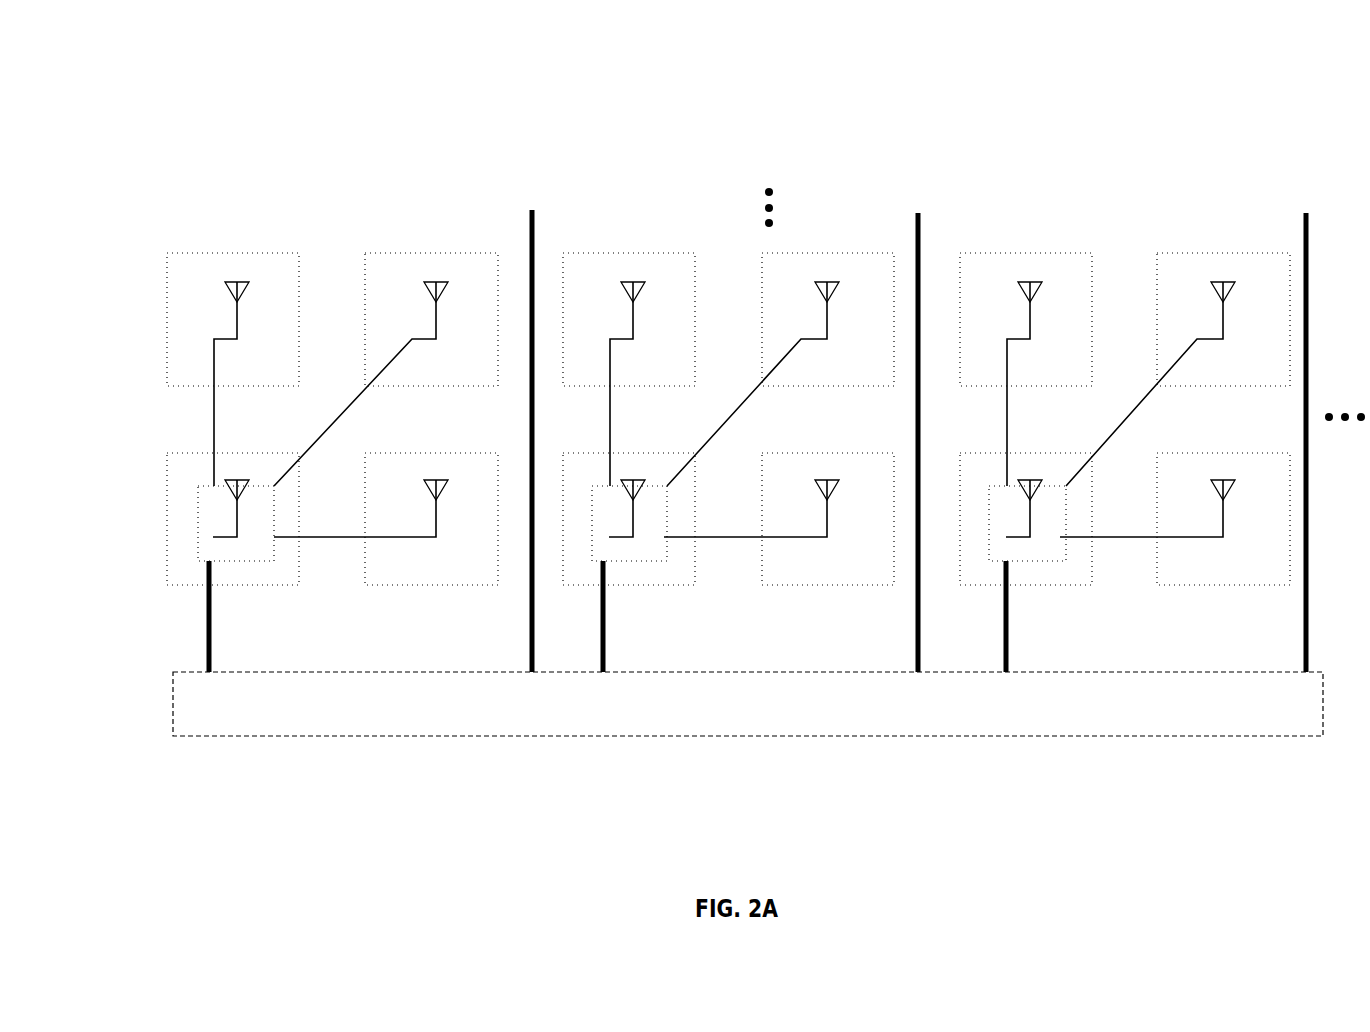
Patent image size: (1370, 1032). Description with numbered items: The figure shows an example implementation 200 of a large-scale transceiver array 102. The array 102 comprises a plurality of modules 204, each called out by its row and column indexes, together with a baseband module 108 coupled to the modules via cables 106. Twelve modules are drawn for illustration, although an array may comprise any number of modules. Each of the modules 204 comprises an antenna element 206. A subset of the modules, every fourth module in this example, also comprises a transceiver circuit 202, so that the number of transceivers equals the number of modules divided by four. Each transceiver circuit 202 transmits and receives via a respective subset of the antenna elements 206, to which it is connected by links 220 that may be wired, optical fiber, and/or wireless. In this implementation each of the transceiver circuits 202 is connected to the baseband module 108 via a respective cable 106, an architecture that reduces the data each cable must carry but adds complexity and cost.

The antenna array system 200 is at (374, 63).
The array 102 is at (248, 212).
The module 204 is at (196, 253).
The antenna element 206 is at (259, 270).
The transceiver circuit 202 is at (200, 483).
The link 220 is at (211, 412).
The cable 106 is at (206, 631).
The baseband module 108 is at (488, 670).